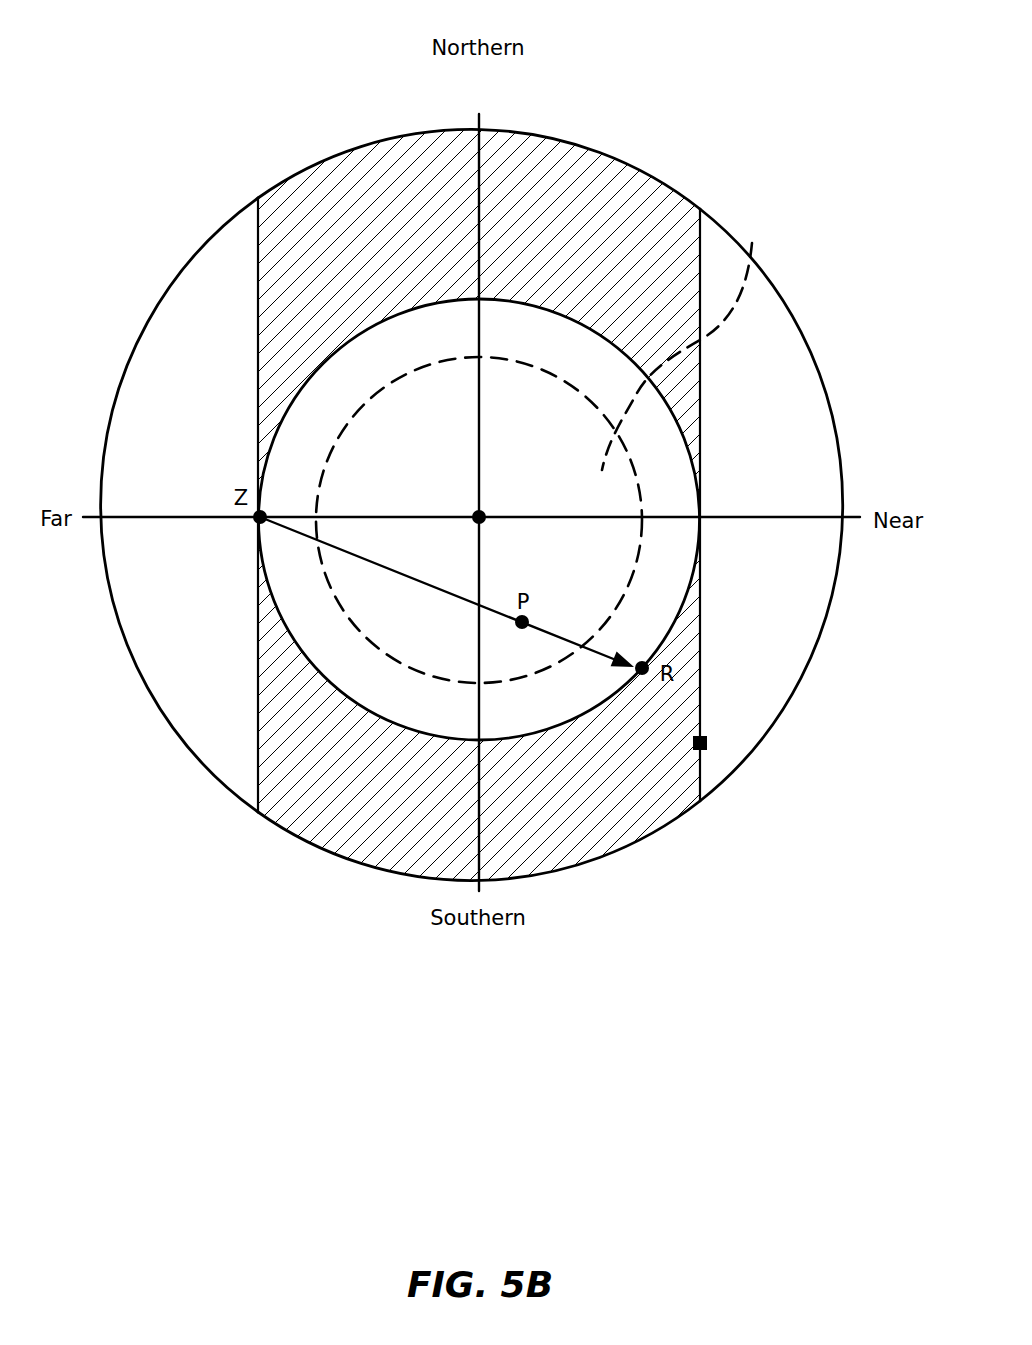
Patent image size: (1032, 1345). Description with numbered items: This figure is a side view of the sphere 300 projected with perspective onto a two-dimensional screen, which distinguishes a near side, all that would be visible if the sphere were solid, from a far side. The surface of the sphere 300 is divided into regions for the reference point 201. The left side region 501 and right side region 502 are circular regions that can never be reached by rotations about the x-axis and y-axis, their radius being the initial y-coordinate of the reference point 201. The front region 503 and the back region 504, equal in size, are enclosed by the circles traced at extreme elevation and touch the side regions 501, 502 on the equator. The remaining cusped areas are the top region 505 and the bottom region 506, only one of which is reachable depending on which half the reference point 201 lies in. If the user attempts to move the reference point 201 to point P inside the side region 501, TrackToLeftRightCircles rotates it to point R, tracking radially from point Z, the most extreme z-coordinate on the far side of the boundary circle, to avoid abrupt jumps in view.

The sphere 300 is at (290, 178).
The left side region 501 is at (580, 353).
The right side region 502 is at (687, 336).
The front region 503 is at (790, 655).
The back region 504 is at (152, 670).
The top region 505 is at (513, 147).
The bottom region 506 is at (610, 840).
The reference point 201 is at (707, 743).